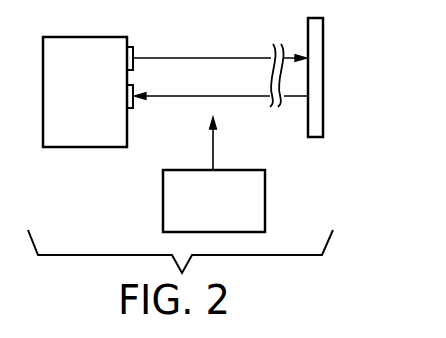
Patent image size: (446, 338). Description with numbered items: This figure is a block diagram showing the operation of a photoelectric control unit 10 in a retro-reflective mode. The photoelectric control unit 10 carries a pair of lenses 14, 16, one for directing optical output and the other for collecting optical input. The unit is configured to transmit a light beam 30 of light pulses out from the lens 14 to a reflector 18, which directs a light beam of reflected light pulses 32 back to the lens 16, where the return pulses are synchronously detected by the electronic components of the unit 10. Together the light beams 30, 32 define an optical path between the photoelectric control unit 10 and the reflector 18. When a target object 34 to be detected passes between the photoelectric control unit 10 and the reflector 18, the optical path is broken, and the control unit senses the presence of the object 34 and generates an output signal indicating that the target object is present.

The photoelectric control unit 10 is at (97, 98).
The lens 14 is at (135, 52).
The lens 16 is at (133, 108).
The reflector 18 is at (313, 138).
The light beam 30 is at (236, 57).
The light beam of reflected light pulses 32 is at (245, 97).
The target object 34 is at (231, 211).